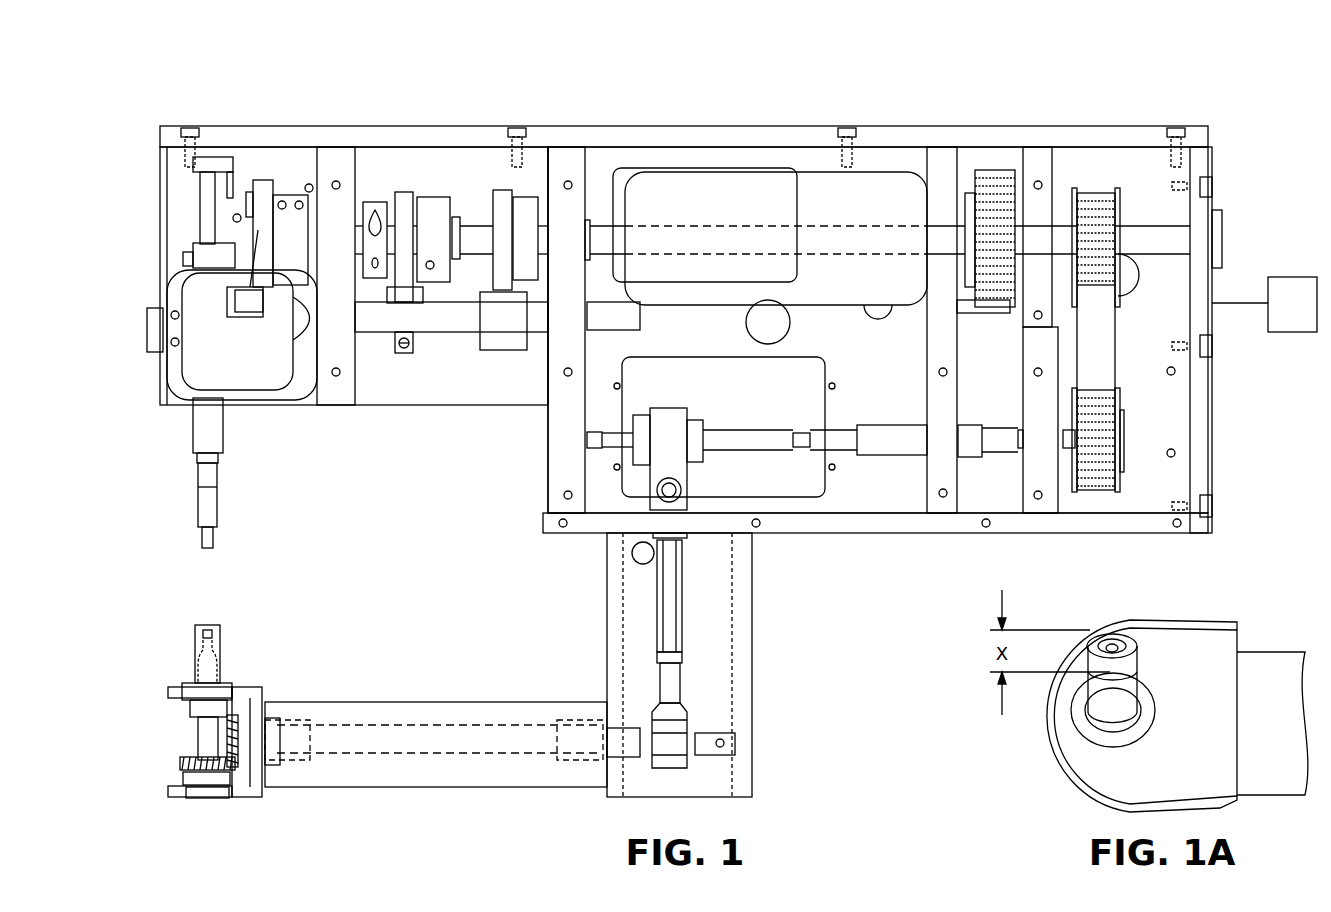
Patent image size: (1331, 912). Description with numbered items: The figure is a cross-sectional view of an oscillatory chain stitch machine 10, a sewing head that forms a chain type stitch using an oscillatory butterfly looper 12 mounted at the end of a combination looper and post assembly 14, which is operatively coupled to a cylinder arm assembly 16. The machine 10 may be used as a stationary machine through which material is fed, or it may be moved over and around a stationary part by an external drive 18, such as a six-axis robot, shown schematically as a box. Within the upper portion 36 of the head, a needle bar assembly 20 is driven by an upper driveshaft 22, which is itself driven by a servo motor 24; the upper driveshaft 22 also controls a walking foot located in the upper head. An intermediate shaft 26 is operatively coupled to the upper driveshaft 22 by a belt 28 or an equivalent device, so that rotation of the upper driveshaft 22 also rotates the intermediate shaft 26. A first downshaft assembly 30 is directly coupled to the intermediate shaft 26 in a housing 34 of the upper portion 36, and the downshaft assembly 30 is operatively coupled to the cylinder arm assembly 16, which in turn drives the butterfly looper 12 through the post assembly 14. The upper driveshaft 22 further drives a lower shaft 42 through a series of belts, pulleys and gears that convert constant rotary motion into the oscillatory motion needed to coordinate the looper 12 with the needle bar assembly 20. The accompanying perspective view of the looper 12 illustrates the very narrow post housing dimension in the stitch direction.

The oscillatory chain stitch machine 10 is at (928, 118).
The oscillatory butterfly looper 12 is at (195, 647).
The combination looper and post assembly 14 is at (163, 709).
The cylinder arm assembly 16 is at (423, 788).
The external drive 18 is at (1305, 319).
The needle bar assembly 20 is at (222, 337).
The upper driveshaft 22 is at (697, 226).
The motor 24 is at (753, 172).
The intermediate shaft 26 is at (845, 453).
The belt 28 is at (1090, 363).
The downshaft assembly 30 is at (672, 618).
The housing 34 is at (545, 522).
The upper portion 36 is at (824, 130).
The lower shaft 42 is at (510, 760).